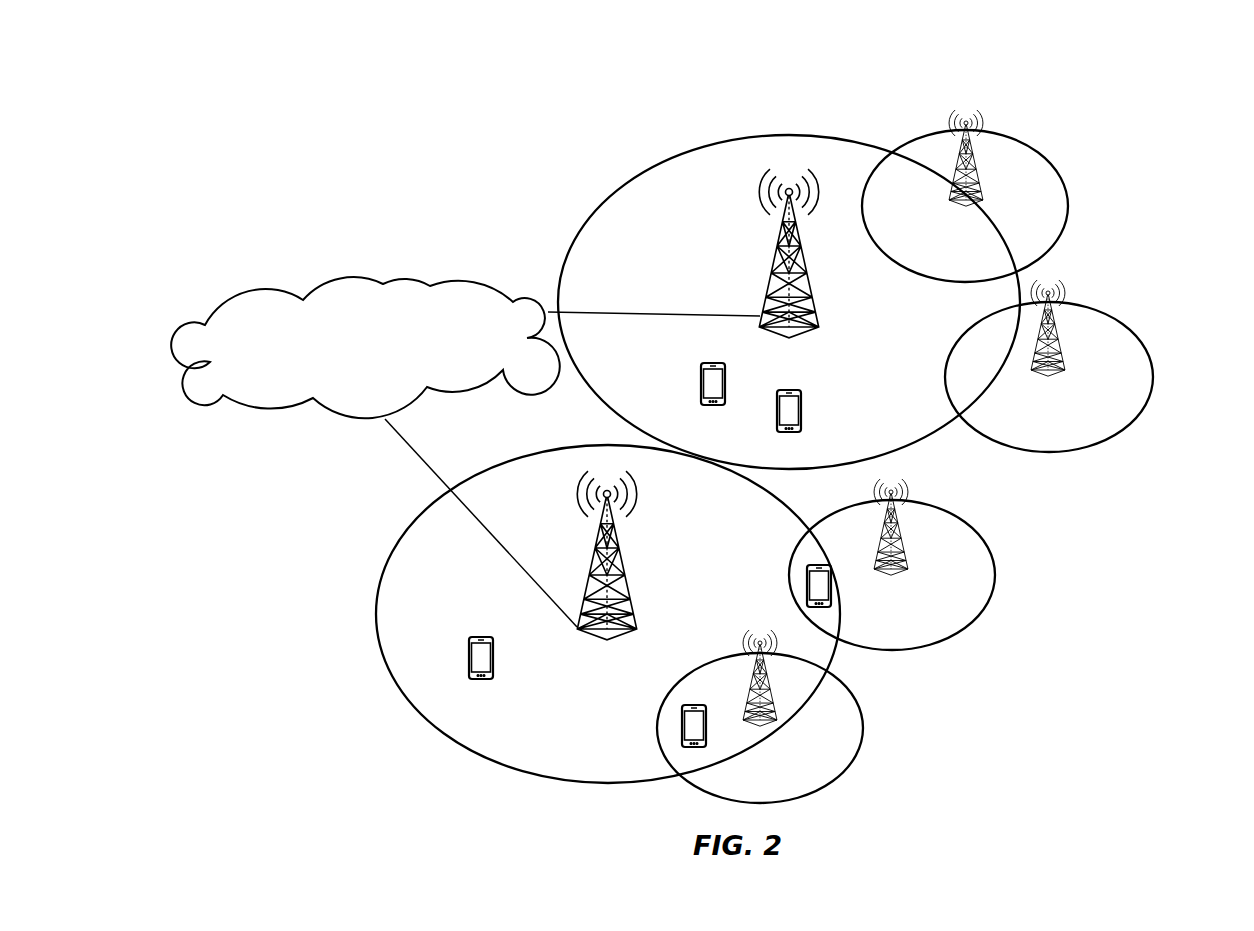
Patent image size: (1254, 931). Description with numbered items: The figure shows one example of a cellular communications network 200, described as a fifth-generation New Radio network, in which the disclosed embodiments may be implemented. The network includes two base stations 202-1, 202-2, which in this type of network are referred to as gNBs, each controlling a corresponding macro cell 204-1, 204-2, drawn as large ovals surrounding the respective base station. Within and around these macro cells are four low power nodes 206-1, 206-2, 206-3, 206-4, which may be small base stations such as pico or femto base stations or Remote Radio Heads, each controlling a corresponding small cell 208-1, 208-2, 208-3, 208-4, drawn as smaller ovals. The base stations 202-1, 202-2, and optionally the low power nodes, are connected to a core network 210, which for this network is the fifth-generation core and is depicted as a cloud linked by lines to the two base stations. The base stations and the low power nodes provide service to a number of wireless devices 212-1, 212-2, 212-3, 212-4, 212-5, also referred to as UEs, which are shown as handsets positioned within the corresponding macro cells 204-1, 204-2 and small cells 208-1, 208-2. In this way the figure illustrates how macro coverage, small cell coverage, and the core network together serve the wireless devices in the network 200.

The cellular communications network 200 is at (1137, 98).
The base station 202-1 is at (627, 578).
The base station 202-2 is at (773, 275).
The macro cell 204-1 is at (478, 757).
The macro cell 204-2 is at (793, 134).
The low power node 206-1 is at (770, 722).
The low power node 206-2 is at (905, 568).
The low power node 206-3 is at (1055, 370).
The low power node 206-4 is at (973, 199).
The small cell 208-1 is at (866, 733).
The small cell 208-2 is at (996, 584).
The small cell 208-3 is at (1153, 382).
The small cell 208-4 is at (1070, 200).
The core network 210 is at (365, 347).
The wireless device 212-1 is at (707, 732).
The wireless device 212-2 is at (830, 587).
The wireless device 212-3 is at (492, 656).
The wireless device 212-4 is at (727, 387).
The wireless device 212-5 is at (803, 410).